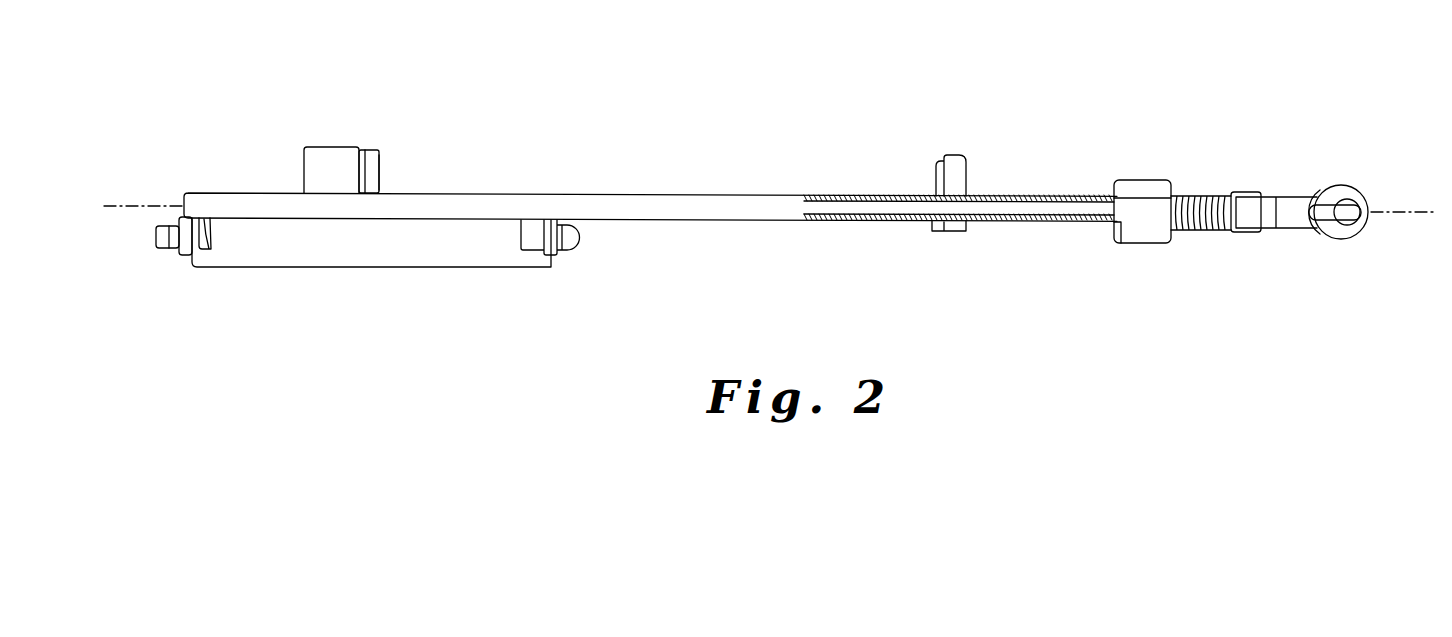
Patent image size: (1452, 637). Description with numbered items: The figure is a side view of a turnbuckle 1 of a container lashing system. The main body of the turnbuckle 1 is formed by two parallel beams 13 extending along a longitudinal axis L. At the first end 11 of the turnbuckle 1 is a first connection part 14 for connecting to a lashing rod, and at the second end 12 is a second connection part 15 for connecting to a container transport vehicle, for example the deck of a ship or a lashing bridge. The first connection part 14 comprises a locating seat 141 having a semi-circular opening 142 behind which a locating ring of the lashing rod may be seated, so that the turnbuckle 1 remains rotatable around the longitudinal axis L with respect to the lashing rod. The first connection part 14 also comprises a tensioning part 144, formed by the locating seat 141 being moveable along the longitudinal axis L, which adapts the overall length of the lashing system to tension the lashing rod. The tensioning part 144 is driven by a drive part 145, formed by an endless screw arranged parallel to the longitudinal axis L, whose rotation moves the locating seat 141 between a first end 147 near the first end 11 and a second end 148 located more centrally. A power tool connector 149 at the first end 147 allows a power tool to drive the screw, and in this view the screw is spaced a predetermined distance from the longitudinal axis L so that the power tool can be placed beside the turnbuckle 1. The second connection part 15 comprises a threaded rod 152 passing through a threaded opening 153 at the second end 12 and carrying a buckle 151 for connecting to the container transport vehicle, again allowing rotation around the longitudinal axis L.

The turnbuckle 1 is at (844, 107).
The longitudinal axis L is at (157, 200).
The first end 11 is at (140, 245).
The second end 12 is at (1390, 224).
The parallel beams 13 is at (700, 207).
The first connection part 14 is at (417, 181).
The locating seat 141 is at (332, 170).
The semi-circular opening 142 is at (390, 161).
The tensioning part 144 is at (370, 131).
The drive part 145 is at (369, 264).
The first end of the endless screw 147 is at (154, 263).
The second end of the endless screw 148 is at (584, 261).
The power tool connector 149 is at (170, 237).
The second connection part 15 is at (1142, 155).
The buckle 151 is at (1298, 208).
The threaded rod 152 is at (1200, 227).
The threaded opening 153 is at (1104, 185).